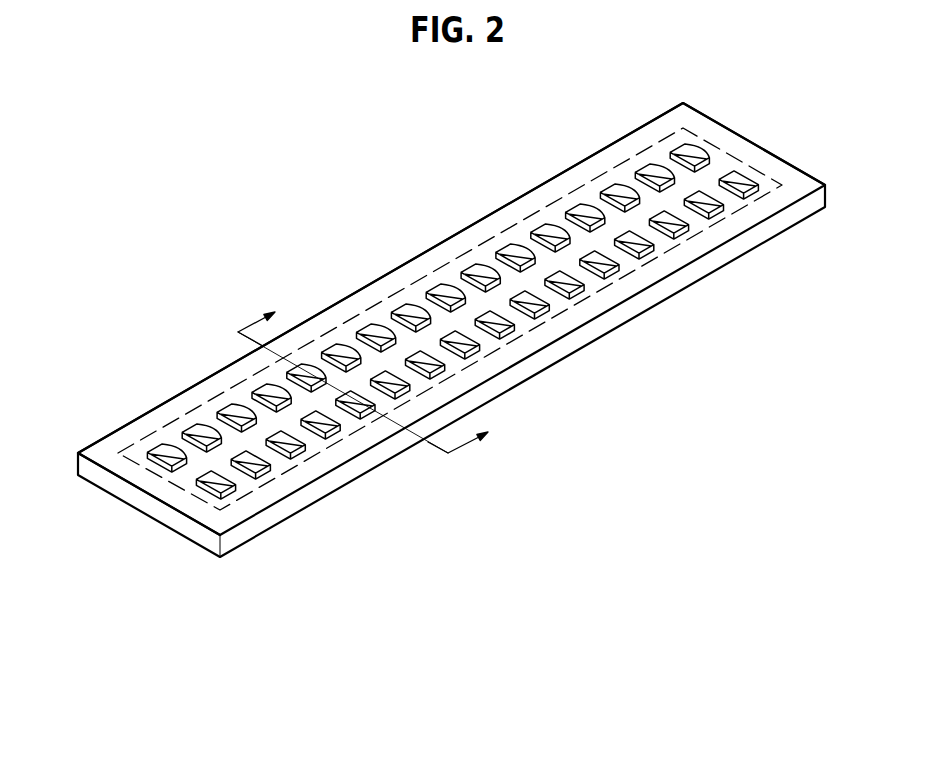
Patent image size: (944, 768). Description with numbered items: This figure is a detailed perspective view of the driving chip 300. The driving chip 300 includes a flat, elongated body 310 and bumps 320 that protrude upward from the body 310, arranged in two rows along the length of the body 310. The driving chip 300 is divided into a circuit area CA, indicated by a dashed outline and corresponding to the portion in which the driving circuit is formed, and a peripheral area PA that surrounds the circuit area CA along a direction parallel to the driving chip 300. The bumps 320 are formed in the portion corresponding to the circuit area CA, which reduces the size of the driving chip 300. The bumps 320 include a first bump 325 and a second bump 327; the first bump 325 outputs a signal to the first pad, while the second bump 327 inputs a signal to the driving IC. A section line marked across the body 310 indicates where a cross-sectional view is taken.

The driving chip 300 is at (193, 213).
The body 310 is at (490, 216).
The bumps 320 is at (240, 618).
The first bump 325 is at (165, 452).
The second bump 327 is at (216, 484).
The circuit area CA is at (723, 157).
The peripheral area PA is at (780, 173).